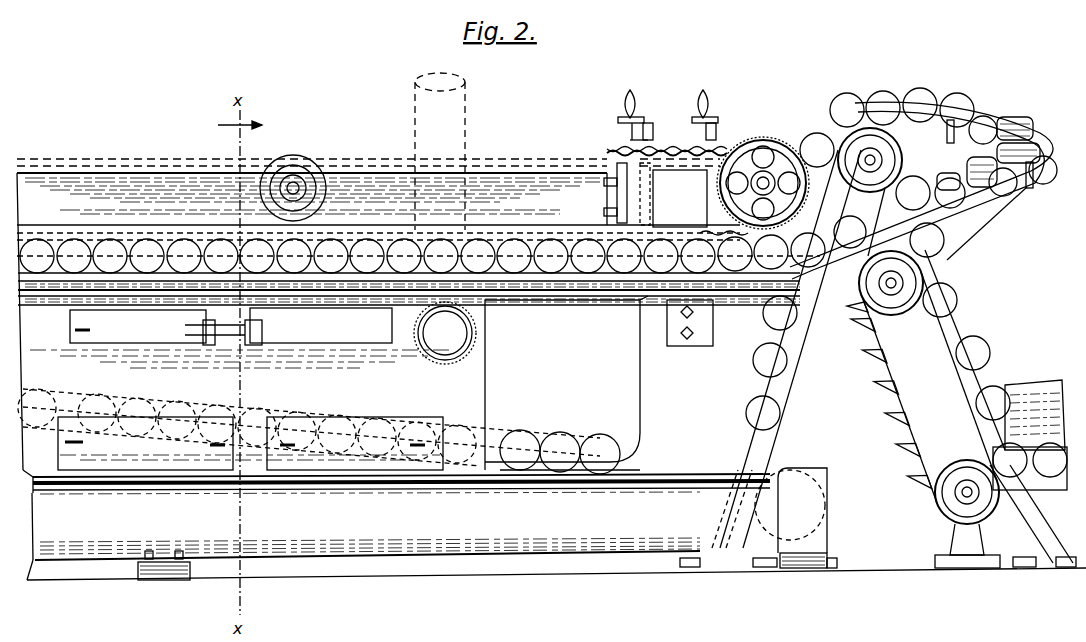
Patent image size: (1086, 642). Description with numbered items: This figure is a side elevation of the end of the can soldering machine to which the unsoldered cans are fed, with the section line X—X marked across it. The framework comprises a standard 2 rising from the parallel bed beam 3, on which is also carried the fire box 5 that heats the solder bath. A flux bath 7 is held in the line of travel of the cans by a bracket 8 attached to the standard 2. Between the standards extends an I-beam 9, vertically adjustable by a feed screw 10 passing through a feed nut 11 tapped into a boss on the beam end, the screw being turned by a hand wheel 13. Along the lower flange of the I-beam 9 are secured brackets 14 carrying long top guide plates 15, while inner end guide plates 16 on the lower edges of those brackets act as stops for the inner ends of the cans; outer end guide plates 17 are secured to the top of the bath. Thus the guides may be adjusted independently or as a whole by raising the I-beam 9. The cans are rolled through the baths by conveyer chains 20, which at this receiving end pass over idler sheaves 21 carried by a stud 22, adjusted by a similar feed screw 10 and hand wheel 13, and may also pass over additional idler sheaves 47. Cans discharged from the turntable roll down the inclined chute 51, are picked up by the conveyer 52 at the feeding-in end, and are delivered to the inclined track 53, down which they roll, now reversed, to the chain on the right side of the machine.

The standard 2 is at (660, 353).
The bed beam 3 is at (551, 376).
The fire box 5 is at (477, 409).
The flux bath 7 is at (637, 292).
The bracket 8 is at (700, 323).
The I-beam 9 is at (608, 194).
The feed screw 10 is at (625, 140).
The feed nut 11 is at (673, 195).
The hand wheel 13 is at (640, 106).
The bracket 14 is at (1028, 396).
The top guide plate 15 is at (343, 282).
The inner end guide plate 16 is at (808, 297).
The outer end guide plate 17 is at (360, 313).
The conveyer chain 20 is at (627, 150).
The idler sheave 21 is at (782, 153).
The stud 22 is at (764, 170).
The additional idler sheave 47 is at (323, 195).
The inclined chute 51 is at (527, 433).
The conveyer 52 is at (793, 378).
The inclined track 53 is at (1035, 135).